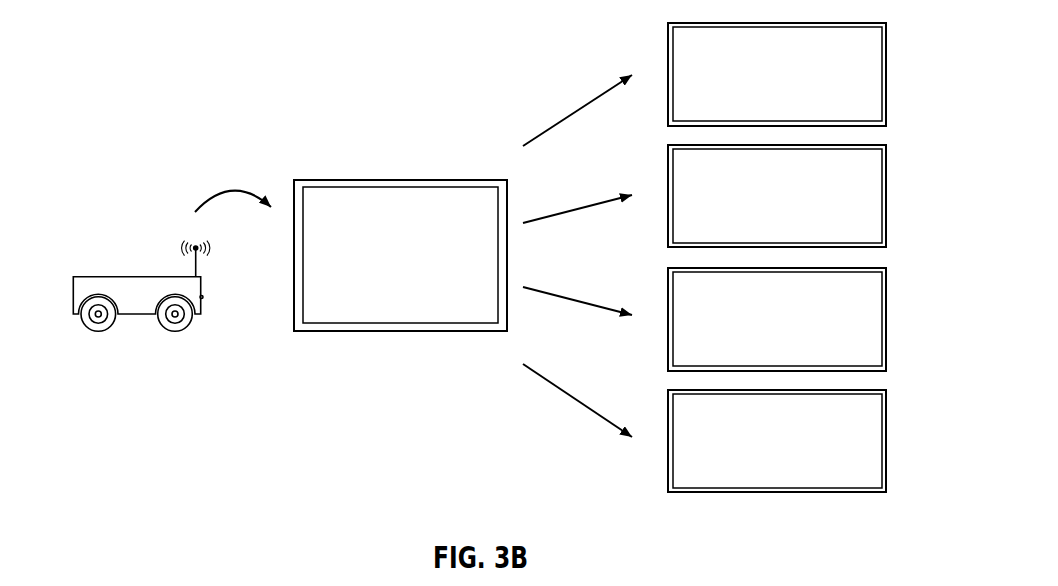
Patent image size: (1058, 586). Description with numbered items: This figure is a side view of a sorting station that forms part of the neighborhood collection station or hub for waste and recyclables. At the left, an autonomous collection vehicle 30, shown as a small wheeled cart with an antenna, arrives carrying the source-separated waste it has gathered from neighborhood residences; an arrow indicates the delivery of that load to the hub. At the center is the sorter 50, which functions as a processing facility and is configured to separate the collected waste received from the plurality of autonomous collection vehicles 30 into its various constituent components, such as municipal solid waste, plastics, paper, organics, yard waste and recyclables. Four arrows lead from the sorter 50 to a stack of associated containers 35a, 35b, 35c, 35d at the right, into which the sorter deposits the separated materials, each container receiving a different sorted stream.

The autonomous collection vehicle 30 is at (95, 277).
The sorter 50 is at (390, 183).
The container 35a is at (887, 75).
The container 35b is at (890, 197).
The container 35c is at (890, 317).
The container 35d is at (887, 440).